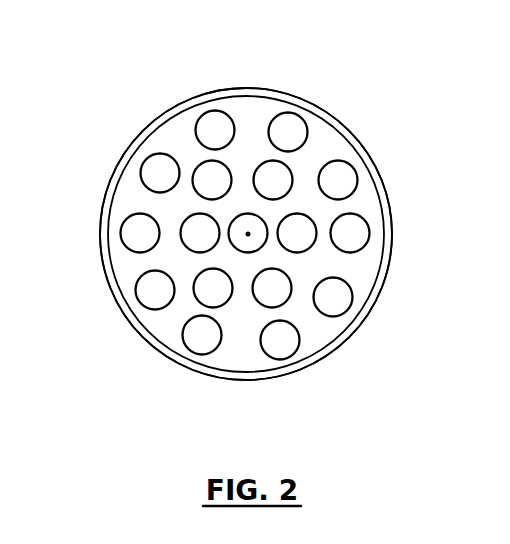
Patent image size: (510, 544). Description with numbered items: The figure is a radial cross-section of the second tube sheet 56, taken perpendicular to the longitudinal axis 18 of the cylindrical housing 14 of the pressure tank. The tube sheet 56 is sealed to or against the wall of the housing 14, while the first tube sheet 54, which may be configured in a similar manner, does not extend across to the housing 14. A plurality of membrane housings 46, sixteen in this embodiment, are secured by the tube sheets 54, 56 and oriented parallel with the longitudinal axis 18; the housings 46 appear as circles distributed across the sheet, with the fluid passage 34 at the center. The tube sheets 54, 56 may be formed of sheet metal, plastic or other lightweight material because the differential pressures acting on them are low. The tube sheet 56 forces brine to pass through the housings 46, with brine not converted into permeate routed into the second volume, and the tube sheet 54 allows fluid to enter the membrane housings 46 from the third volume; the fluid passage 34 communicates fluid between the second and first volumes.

The housing 14 is at (376, 166).
The longitudinal axis 18 is at (248, 232).
The fluid passage 34 is at (234, 221).
The membrane housings 46 is at (199, 167).
The first tube sheet 54 is at (383, 247).
The second tube sheet 56 is at (346, 126).